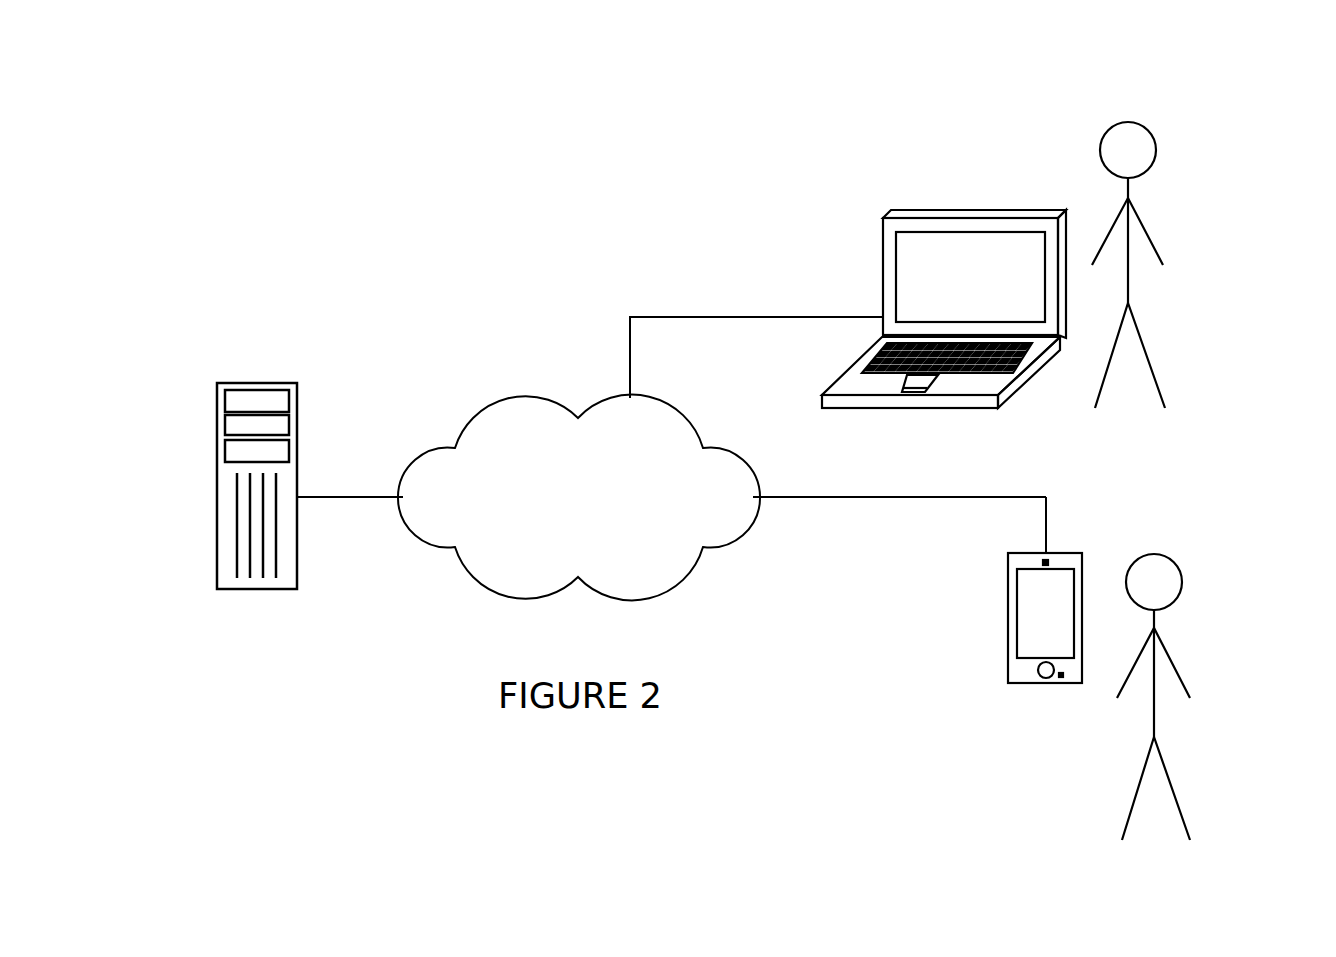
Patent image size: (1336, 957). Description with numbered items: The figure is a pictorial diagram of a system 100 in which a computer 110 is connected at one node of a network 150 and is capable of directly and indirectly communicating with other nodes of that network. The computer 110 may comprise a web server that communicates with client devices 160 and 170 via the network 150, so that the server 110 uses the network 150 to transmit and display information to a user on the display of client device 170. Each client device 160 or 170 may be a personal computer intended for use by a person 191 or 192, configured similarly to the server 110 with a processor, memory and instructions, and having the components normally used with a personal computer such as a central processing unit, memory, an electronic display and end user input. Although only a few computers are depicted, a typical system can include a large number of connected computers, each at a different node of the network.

The system 100 is at (263, 76).
The computer 110 is at (216, 397).
The network 150 is at (525, 397).
The client device 160 is at (1008, 573).
The client device 170 is at (882, 250).
The person 191 is at (1157, 210).
The person 192 is at (1180, 627).